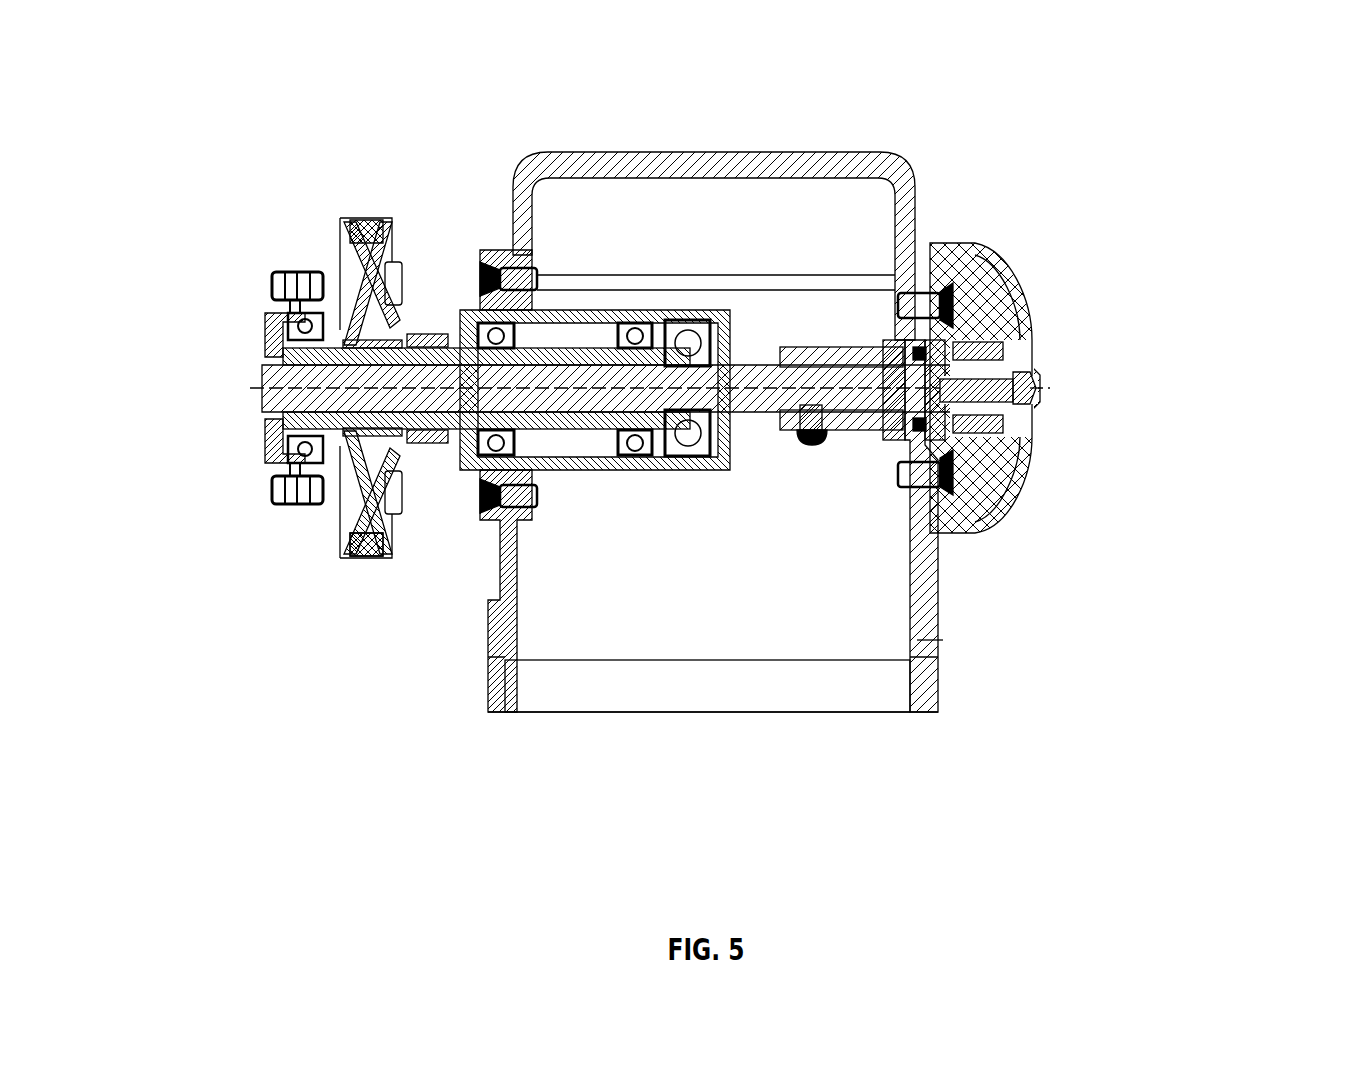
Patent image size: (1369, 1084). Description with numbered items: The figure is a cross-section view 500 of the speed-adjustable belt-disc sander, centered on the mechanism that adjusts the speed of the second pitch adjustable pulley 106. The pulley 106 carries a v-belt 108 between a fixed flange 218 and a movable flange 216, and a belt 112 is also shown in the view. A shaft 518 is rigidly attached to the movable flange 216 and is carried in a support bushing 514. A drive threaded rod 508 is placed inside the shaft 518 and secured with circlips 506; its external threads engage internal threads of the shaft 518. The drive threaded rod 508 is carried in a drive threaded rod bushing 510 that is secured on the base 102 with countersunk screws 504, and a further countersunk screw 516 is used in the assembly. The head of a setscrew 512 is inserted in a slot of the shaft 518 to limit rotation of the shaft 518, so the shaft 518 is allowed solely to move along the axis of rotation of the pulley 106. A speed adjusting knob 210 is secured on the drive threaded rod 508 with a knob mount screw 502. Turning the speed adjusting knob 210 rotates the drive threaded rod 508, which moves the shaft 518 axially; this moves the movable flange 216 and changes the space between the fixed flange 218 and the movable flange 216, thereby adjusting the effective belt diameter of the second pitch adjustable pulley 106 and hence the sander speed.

The cross-section view 500 is at (1141, 95).
The base 102 is at (915, 226).
The second pitch adjustable pulley 106 is at (343, 218).
The v-belt 108 is at (365, 556).
The belt 112 is at (447, 433).
The speed adjusting knob 210 is at (1013, 497).
The movable flange 216 is at (262, 448).
The fixed flange 218 is at (305, 500).
The knob mount screw 502 is at (1035, 403).
The countersunk screw 504 is at (970, 527).
The circlip 506 is at (930, 537).
The drive threaded rod 508 is at (865, 400).
The drive threaded rod bushing 510 is at (845, 420).
The setscrew 512 is at (805, 435).
The support bushing 514 is at (634, 462).
The countersunk screw 516 is at (503, 530).
The shaft 518 is at (262, 368).